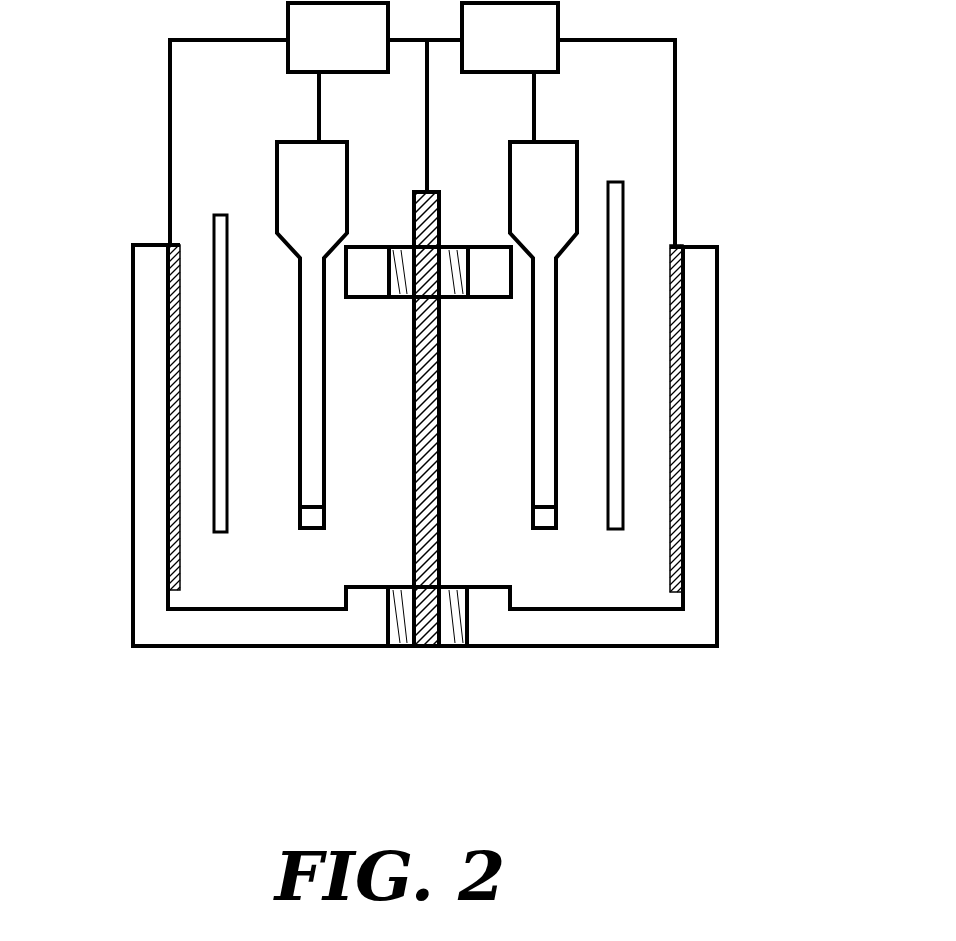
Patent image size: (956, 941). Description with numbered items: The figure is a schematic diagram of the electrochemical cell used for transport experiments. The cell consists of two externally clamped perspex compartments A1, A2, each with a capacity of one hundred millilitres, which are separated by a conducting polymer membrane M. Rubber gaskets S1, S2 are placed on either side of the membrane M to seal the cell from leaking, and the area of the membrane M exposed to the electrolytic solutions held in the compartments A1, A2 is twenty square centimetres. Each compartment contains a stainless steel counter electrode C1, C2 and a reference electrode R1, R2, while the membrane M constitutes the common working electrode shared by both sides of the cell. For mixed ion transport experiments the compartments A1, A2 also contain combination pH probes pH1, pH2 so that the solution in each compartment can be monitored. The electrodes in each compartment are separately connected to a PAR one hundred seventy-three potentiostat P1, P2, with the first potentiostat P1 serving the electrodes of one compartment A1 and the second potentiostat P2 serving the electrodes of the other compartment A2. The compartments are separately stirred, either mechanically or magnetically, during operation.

The potentiostat P1 is at (338, 72).
The potentiostat P2 is at (510, 72).
The reference electrode R1 is at (334, 166).
The reference electrode R2 is at (508, 153).
The combination pH probe pH1 is at (218, 213).
The combination pH probe pH2 is at (615, 180).
The stainless steel counter electrode C1 is at (148, 352).
The stainless steel counter electrode C2 is at (703, 341).
The perspex compartment A1 is at (191, 641).
The perspex compartment A2 is at (694, 641).
The rubber gasket S1 is at (390, 636).
The rubber gasket S2 is at (473, 632).
The conducting polymer membrane M is at (425, 651).